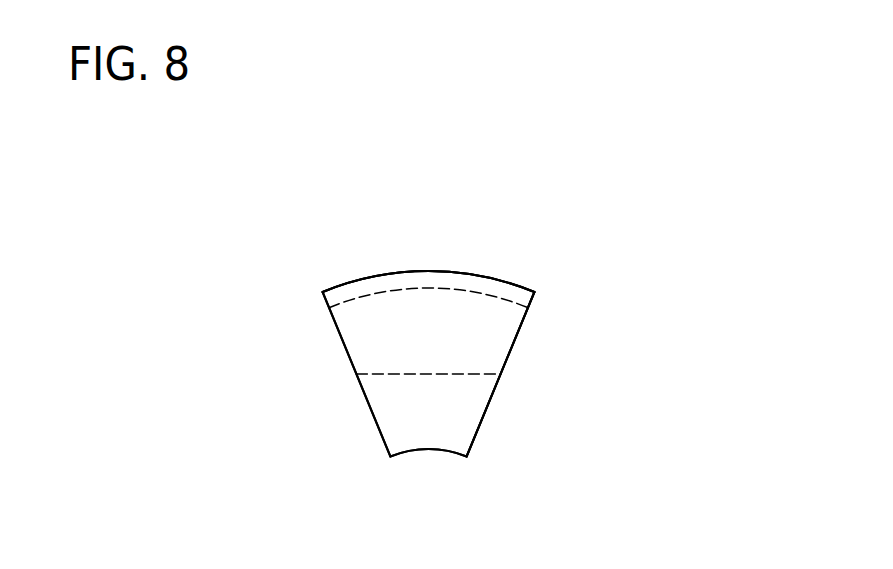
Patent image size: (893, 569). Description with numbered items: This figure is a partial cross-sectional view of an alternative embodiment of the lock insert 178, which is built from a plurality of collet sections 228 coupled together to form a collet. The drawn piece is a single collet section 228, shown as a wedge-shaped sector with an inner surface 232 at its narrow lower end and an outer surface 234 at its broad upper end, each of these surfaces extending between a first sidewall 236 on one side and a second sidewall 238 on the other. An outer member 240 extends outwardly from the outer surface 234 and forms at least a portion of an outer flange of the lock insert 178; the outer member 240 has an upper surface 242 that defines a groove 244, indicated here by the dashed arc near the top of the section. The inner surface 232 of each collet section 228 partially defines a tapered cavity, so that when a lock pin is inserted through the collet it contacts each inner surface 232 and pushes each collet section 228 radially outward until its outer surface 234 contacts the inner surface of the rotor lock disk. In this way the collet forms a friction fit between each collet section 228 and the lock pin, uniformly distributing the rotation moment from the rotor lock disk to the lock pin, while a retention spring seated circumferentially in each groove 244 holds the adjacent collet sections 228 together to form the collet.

The lock insert 178 is at (610, 210).
The collet section 228 is at (561, 284).
The inner surface 232 is at (433, 452).
The outer surface 234 is at (385, 372).
The first sidewall 236 is at (375, 422).
The second sidewall 238 is at (485, 415).
The outer member 240 is at (483, 275).
The upper surface 242 is at (430, 271).
The groove 244 is at (347, 275).